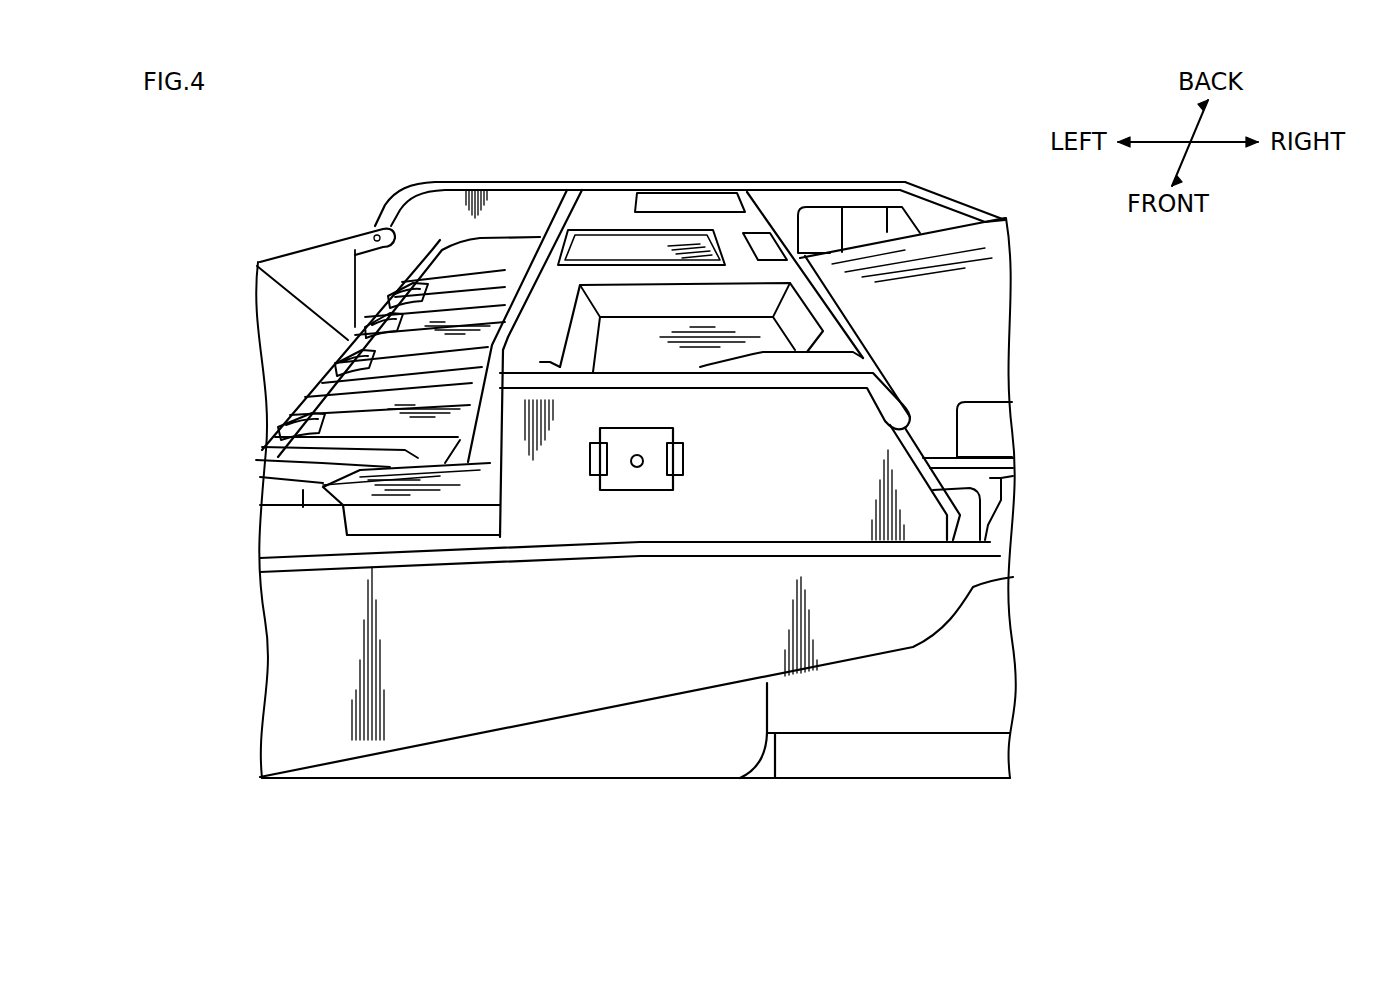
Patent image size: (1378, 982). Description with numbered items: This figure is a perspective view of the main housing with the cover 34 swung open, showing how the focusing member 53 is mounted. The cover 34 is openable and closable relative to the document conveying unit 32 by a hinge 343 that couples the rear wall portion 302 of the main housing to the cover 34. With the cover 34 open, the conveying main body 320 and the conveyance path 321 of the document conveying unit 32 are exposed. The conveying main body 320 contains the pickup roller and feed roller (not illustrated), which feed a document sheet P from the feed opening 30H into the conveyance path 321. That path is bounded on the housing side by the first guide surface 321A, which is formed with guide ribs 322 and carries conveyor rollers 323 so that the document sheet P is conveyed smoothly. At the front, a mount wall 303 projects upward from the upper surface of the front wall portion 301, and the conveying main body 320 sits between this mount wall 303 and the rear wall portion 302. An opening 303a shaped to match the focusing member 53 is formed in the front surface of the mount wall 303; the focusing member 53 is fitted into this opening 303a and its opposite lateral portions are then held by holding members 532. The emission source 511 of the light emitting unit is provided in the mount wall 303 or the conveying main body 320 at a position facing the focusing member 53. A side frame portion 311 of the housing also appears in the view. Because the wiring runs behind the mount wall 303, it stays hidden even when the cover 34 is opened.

The feed opening 30H is at (830, 299).
The front wall portion 301 is at (320, 637).
The rear wall portion 302 is at (463, 183).
The mount wall 303 is at (840, 517).
The opening 303a is at (650, 430).
The side frame member 311 is at (862, 220).
The document conveying unit 32 is at (607, 218).
The conveying main body 320 is at (725, 223).
The conveyance path 321 is at (503, 258).
The first guide surface 321A is at (373, 427).
The guide ribs 322 is at (478, 300).
The conveyor rollers 323 is at (366, 314).
The cover 34 is at (283, 323).
The hinge 343 is at (285, 262).
The emission source 511 is at (636, 470).
The focusing member 53 is at (660, 497).
The holding members 532 is at (590, 458).
The document sheet P is at (983, 257).